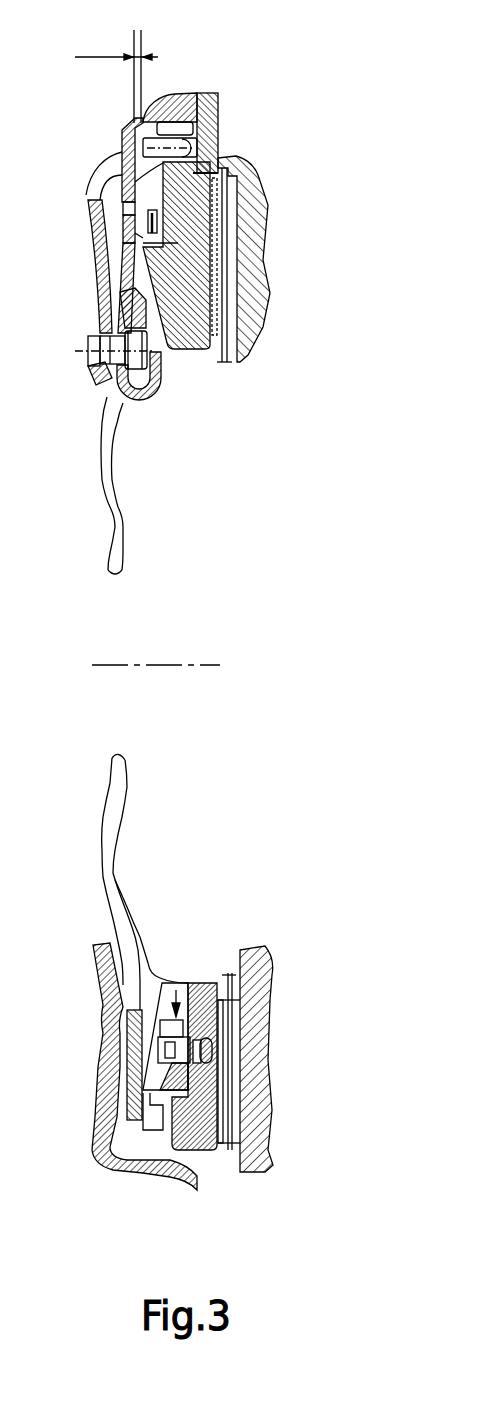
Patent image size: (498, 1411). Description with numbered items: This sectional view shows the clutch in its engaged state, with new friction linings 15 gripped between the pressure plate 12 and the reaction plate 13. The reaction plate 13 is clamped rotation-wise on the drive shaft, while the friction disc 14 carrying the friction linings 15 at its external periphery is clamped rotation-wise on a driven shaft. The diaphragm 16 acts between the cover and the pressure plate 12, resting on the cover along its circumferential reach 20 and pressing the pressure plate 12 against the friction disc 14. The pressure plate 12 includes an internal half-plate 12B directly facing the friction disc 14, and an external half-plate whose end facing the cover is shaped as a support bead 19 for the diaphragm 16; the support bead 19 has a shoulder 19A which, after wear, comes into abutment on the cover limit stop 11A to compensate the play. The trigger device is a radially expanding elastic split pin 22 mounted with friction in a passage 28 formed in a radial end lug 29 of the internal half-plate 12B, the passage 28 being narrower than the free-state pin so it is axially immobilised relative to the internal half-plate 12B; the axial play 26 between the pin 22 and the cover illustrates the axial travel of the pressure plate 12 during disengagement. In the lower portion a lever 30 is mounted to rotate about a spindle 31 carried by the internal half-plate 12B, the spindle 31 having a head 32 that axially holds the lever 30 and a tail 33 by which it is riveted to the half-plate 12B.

The cover limit stop 11A is at (143, 197).
The pressure plate 12 is at (183, 362).
The internal half-plate 12B is at (200, 303).
The reaction plate 13 is at (237, 107).
The friction disc 14 is at (229, 375).
The friction linings 15 is at (218, 236).
The diaphragm 16 is at (125, 505).
The support bead 19 is at (127, 233).
The shoulder of the support bead 19A is at (123, 229).
The circumferential reach 20 is at (117, 292).
The radially expanding elastic split pin 22 is at (142, 117).
The axial play 26 is at (82, 57).
The passage 28 is at (200, 146).
The radial end lug 29 is at (143, 123).
The lever 30 is at (178, 990).
The spindle 31 is at (192, 1085).
The head 32 is at (165, 1057).
The tail 33 is at (213, 1050).